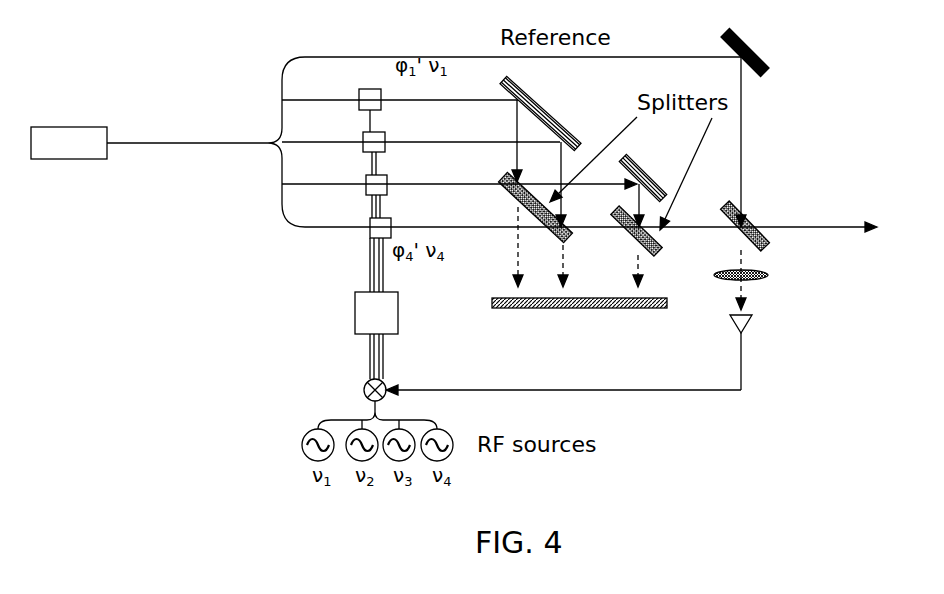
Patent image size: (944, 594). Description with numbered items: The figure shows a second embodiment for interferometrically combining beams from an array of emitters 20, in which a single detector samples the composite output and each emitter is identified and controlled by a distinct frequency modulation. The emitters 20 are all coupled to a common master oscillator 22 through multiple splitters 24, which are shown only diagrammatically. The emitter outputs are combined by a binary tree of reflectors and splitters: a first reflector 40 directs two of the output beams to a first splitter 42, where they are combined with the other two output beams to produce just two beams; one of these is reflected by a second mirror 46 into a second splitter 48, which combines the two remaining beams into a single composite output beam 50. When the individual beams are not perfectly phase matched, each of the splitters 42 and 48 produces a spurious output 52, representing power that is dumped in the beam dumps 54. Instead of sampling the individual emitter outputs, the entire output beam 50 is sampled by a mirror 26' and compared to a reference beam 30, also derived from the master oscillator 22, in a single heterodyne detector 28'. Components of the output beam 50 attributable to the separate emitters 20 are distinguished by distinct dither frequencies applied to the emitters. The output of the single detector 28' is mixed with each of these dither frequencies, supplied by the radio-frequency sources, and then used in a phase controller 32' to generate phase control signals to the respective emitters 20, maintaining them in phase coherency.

The emitters 20 is at (359, 90).
The master oscillator 22 is at (90, 160).
The splitters 24 is at (260, 158).
The mirror 26' is at (764, 216).
The heterodyne detector 28' is at (804, 320).
The reference beam 30 is at (683, 57).
The phase controller 32' is at (345, 328).
The first reflector 40 is at (547, 110).
The first splitter 42 is at (498, 175).
The second mirror 46 is at (638, 166).
The second splitter 48 is at (646, 246).
The composite output beam 50 is at (833, 223).
The spurious output 52 is at (517, 238).
The beam dumps 54 is at (667, 300).